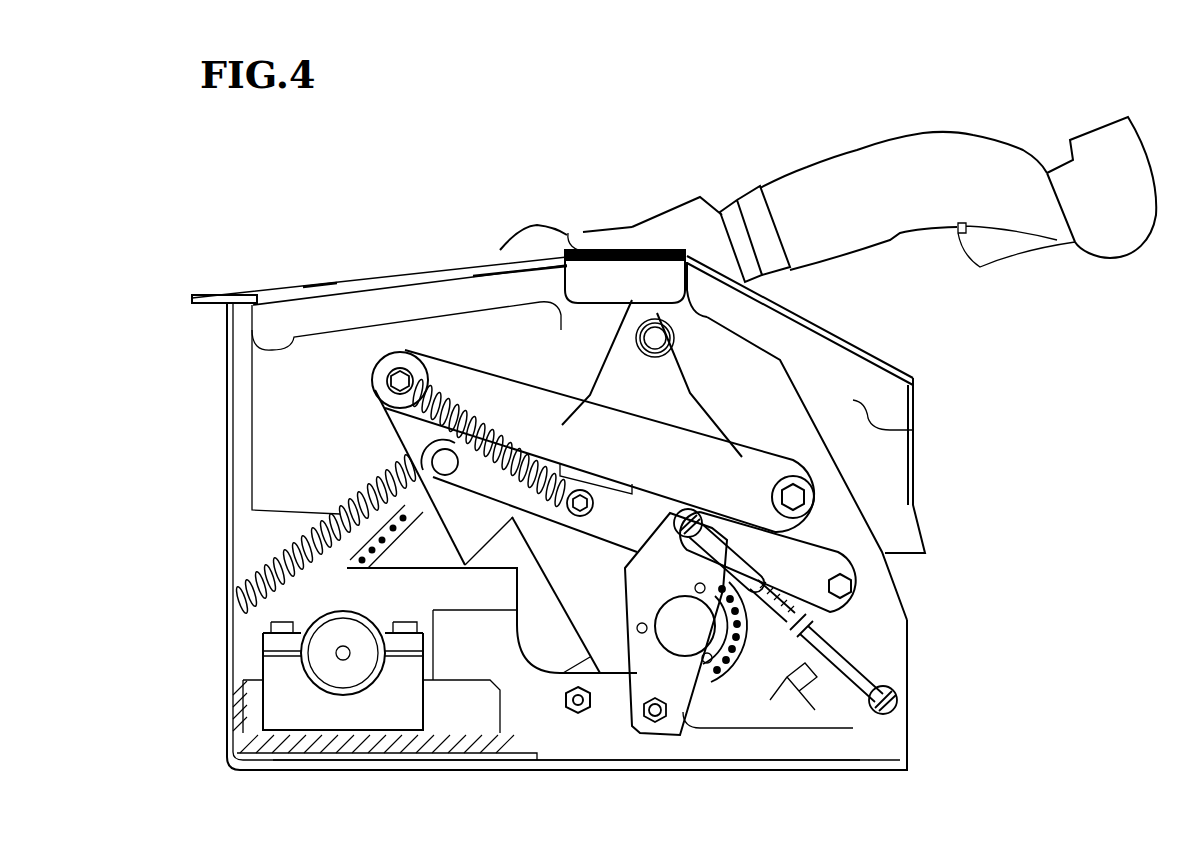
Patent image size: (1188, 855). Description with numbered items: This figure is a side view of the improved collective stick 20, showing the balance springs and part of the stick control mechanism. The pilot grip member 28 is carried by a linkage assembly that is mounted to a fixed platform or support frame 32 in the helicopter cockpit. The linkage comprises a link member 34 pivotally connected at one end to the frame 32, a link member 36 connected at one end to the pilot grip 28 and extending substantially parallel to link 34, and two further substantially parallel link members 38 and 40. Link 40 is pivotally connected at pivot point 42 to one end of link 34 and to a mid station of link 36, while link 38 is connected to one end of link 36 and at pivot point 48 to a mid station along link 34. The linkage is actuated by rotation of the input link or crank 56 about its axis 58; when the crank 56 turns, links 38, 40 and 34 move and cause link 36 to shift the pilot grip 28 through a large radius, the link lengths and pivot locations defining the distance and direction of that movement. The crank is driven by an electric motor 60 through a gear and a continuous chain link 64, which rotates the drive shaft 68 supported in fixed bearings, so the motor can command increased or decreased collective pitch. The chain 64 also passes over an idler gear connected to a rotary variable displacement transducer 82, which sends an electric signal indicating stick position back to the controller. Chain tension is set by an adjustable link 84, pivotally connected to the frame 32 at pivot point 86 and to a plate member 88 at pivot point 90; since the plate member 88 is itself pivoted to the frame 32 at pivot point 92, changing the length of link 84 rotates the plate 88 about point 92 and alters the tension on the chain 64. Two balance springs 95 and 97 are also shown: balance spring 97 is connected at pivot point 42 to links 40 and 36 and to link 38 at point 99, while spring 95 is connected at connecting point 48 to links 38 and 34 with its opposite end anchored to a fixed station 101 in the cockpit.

The collective stick 20 is at (983, 96).
The pilot grip member 28 is at (828, 199).
The fixed platform 32 is at (893, 750).
The link member 34 is at (506, 477).
The link member 36 is at (806, 404).
The link member 38 is at (768, 562).
The link member 40 is at (593, 441).
The pivot point 42 is at (392, 382).
The pivot point 48 is at (455, 470).
The input link or crank 56 is at (627, 486).
The axis 58 is at (665, 339).
The electric motor 60 is at (352, 677).
The continuous chain link 64 is at (740, 661).
The drive shaft 68 is at (640, 323).
The rotary variable displacement transducer 82 is at (685, 626).
The adjustable link 84 is at (853, 667).
The pivot point 86 is at (898, 700).
The plate member 88 is at (676, 624).
The pivot point 90 is at (695, 510).
The pivot point 92 is at (650, 720).
The balance spring 95 is at (383, 487).
The balance spring 97 is at (497, 437).
The connecting point 99 is at (590, 505).
The fixed station 101 is at (235, 606).